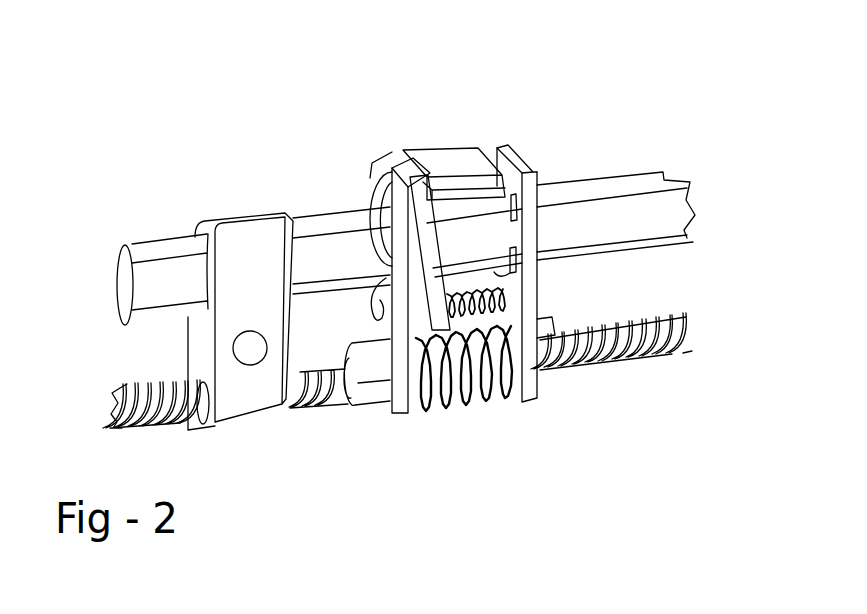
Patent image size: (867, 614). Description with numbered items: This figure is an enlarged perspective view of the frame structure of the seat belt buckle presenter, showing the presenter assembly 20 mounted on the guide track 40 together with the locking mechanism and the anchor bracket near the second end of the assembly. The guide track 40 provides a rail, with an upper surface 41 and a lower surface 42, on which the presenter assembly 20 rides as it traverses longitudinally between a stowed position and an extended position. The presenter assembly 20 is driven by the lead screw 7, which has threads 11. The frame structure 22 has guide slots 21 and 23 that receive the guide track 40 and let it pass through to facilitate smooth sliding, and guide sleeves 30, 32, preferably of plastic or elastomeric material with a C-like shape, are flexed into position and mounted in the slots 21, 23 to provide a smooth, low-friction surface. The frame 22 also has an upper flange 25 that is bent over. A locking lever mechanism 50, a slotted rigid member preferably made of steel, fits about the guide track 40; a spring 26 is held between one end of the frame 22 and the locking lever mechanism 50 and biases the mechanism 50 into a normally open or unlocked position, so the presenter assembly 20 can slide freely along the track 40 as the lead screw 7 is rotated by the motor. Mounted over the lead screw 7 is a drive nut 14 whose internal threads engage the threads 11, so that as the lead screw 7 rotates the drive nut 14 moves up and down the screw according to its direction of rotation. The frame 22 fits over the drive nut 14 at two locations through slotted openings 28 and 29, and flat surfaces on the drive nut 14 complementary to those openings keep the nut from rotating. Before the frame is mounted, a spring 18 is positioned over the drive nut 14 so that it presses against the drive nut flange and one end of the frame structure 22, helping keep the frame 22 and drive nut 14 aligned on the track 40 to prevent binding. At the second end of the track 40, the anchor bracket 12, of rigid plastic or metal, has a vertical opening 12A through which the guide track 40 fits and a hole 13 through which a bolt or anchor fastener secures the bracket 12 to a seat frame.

The lead screw 7 is at (567, 380).
The threads 11 is at (625, 363).
The anchor assembly 12 is at (232, 426).
The vertical opening 12A is at (208, 280).
The through hole 13 is at (250, 348).
The drive nut 14 is at (463, 397).
The spring 18 is at (482, 386).
The presenter assembly 20 is at (385, 166).
The guide slot 21 is at (388, 266).
The frame structure 22 is at (511, 167).
The guide slot 23 is at (513, 237).
The upper flange 25 is at (452, 168).
The spring 26 is at (446, 389).
The slotted opening 28 is at (385, 372).
The slotted opening 29 is at (503, 388).
The guide sleeve 30 is at (372, 168).
The guide sleeve 32 is at (539, 185).
The guide track 40 is at (308, 258).
The upper surface 41 is at (632, 182).
The lower surface 42 is at (646, 251).
The locking lever mechanism 50 is at (404, 166).